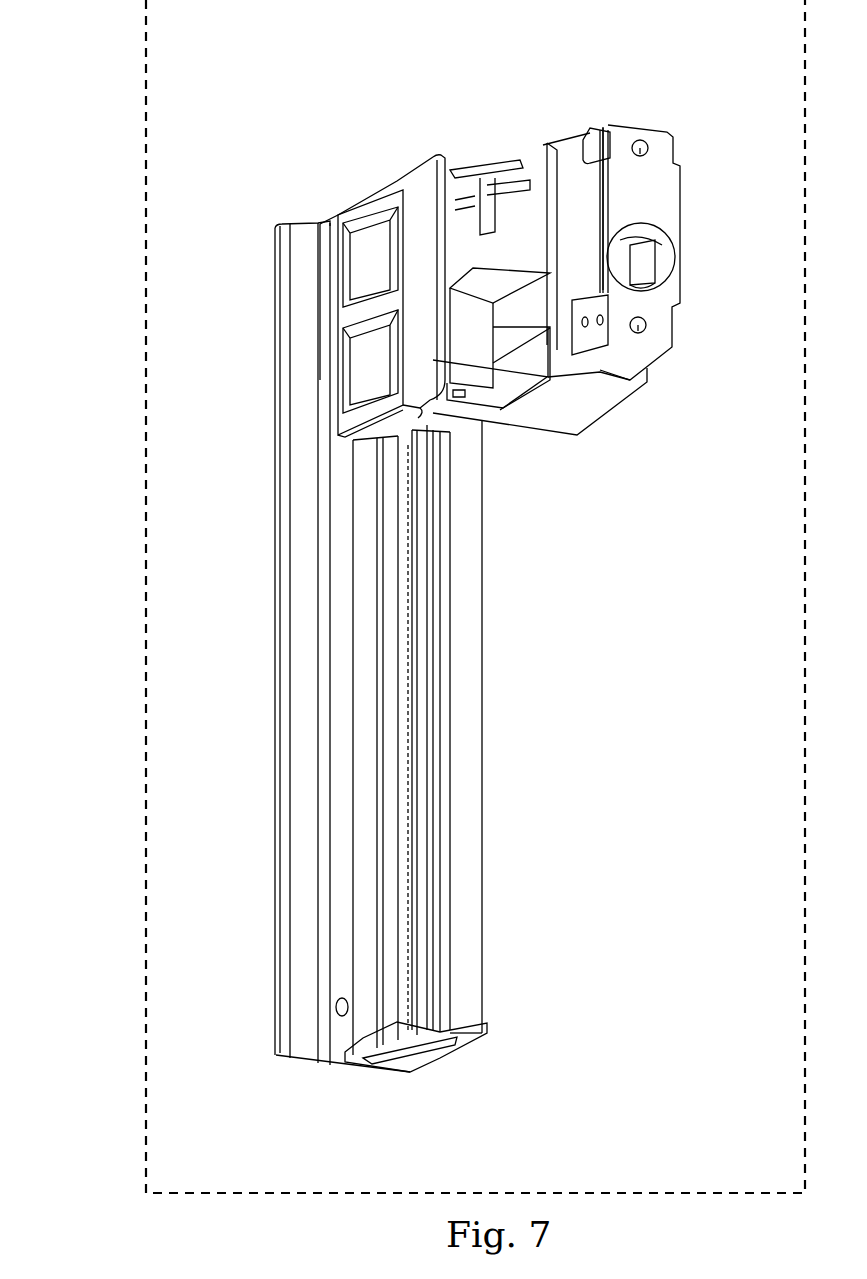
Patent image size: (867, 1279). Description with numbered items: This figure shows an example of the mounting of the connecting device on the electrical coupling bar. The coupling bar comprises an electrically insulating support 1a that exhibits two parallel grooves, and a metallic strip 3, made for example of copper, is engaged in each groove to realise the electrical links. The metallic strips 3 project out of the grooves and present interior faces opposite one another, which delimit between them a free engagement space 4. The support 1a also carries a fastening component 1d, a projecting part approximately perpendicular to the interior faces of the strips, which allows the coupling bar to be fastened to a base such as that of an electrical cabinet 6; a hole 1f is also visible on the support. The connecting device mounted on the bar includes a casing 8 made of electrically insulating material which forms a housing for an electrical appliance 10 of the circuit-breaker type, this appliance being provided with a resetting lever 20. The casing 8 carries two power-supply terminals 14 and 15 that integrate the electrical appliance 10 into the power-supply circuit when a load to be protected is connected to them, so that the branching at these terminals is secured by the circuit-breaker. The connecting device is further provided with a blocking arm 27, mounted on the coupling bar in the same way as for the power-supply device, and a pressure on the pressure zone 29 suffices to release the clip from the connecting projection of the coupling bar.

The electrically insulating support 1a is at (406, 685).
The fastening component 1d is at (278, 383).
The hole 1f is at (357, 1023).
The metallic strip 3 is at (455, 1068).
The free engagement space 4 is at (415, 1024).
The electrical cabinet 6 is at (146, 222).
The casing 8 is at (588, 433).
The electrical appliance 10 is at (662, 130).
The power-supply terminal 14 is at (520, 165).
The power-supply terminal 15 is at (508, 185).
The resetting lever 20 is at (662, 225).
The blocking arm 27 is at (357, 185).
The pressure zone 29 is at (437, 157).